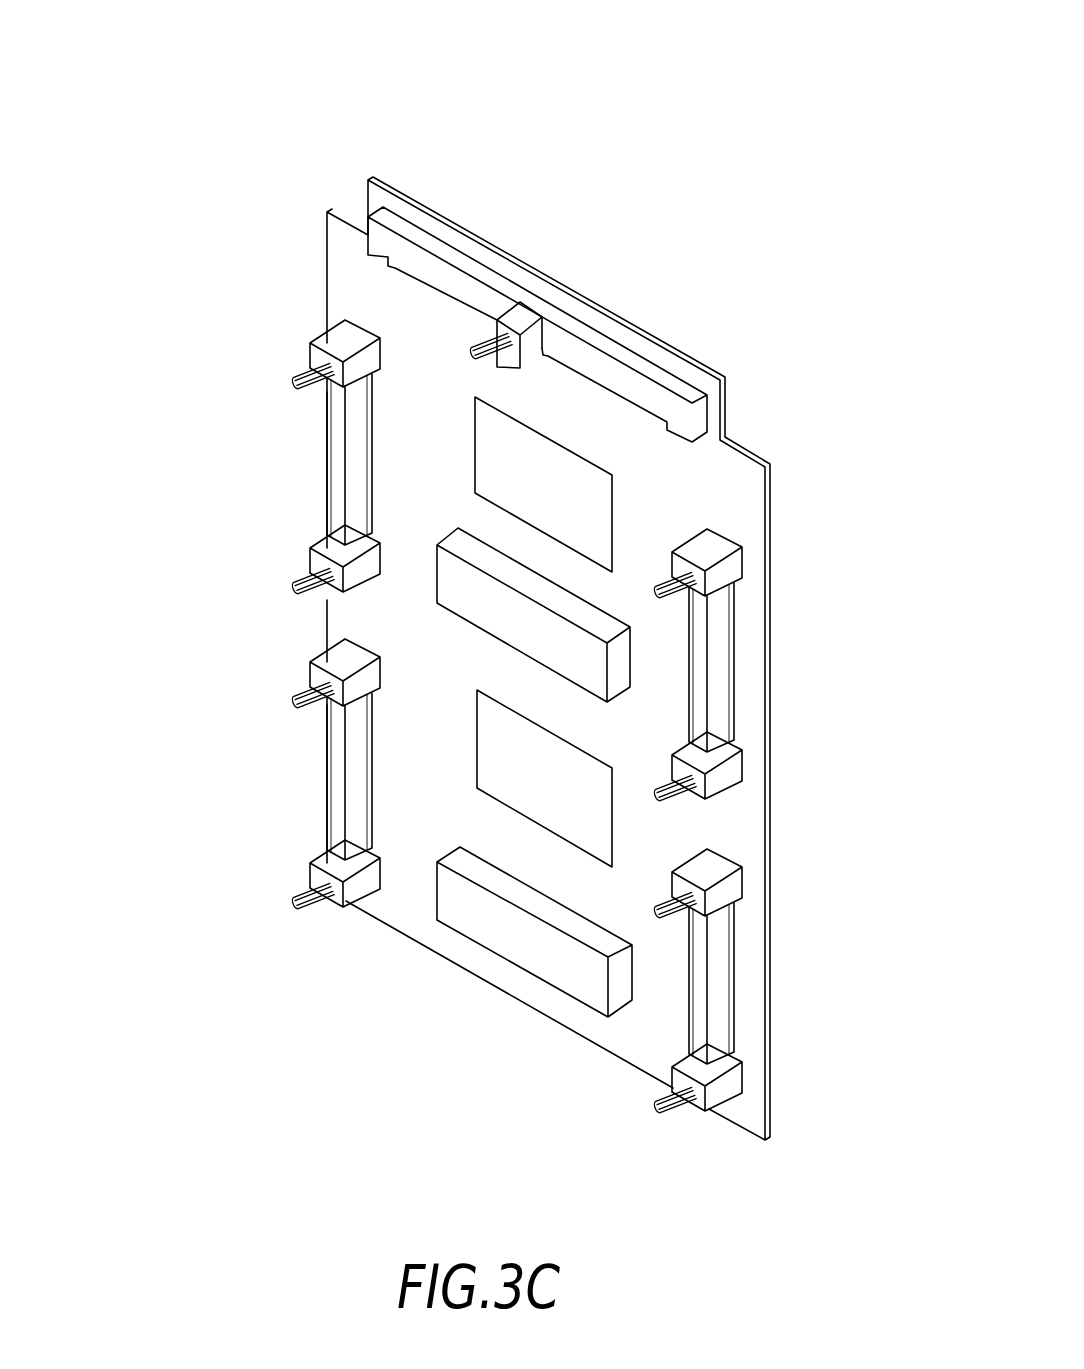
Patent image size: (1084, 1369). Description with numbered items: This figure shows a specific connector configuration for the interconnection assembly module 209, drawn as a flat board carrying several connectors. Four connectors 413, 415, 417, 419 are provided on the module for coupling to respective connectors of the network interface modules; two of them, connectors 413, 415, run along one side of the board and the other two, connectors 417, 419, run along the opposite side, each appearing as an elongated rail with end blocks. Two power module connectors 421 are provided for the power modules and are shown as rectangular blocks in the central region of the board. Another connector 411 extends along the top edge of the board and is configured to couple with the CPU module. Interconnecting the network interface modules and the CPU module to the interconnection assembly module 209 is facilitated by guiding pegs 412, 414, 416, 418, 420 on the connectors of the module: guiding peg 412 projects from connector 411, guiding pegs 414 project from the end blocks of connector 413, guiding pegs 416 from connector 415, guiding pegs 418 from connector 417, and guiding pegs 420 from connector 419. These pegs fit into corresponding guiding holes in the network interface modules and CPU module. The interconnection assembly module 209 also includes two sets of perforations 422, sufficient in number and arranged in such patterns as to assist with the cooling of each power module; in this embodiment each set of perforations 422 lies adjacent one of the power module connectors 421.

The interconnection assembly module 209 is at (226, 50).
The connector 411 is at (593, 363).
The guiding peg 412 is at (491, 343).
The connector 413 is at (343, 478).
The guiding peg 414 is at (300, 370).
The connector 415 is at (340, 818).
The guiding peg 416 is at (300, 692).
The connector 417 is at (723, 660).
The guiding peg 418 is at (731, 543).
The connector 419 is at (723, 976).
The guiding peg 420 is at (722, 857).
The power module connector 421 is at (571, 612).
The perforations 422 is at (582, 477).